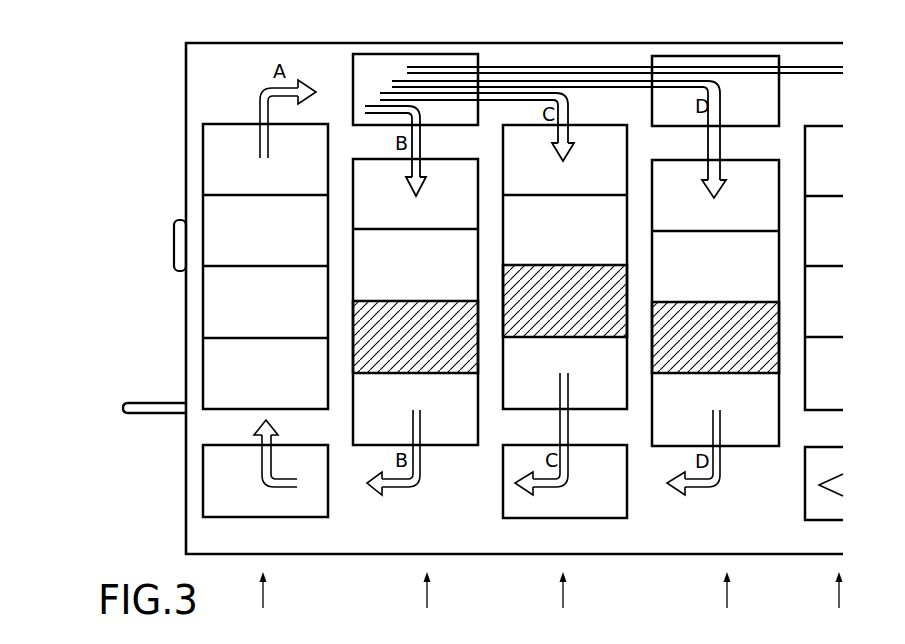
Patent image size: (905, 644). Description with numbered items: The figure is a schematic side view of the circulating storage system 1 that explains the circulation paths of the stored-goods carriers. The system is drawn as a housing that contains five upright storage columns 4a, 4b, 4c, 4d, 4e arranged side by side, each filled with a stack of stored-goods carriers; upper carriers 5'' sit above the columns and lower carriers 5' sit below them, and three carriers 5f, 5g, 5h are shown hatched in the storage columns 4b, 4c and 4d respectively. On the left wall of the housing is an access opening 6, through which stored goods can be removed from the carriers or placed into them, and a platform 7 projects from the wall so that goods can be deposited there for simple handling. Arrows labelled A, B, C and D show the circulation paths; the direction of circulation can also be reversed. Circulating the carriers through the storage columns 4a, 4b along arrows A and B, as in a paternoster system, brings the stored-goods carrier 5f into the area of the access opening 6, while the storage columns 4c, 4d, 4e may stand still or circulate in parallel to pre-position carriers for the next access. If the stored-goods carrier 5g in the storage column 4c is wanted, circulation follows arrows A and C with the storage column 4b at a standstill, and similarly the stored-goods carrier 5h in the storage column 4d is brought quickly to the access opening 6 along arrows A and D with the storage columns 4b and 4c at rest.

The air conditioning device housing 1 is at (165, 36).
The access opening 6 is at (473, 378).
The mounting bracket 7 is at (149, 394).
The lower filter modules 5' is at (523, 525).
The upper filter modules with air ducts 5'' is at (598, 101).
The stored-goods carrier 5f is at (435, 357).
The stored-goods carrier 5g is at (533, 315).
The stored-goods carrier 5h is at (685, 350).
The storage column 4a is at (263, 602).
The storage column 4b is at (426, 602).
The storage column 4c is at (562, 602).
The storage column 4d is at (728, 602).
The storage column 4e is at (838, 602).